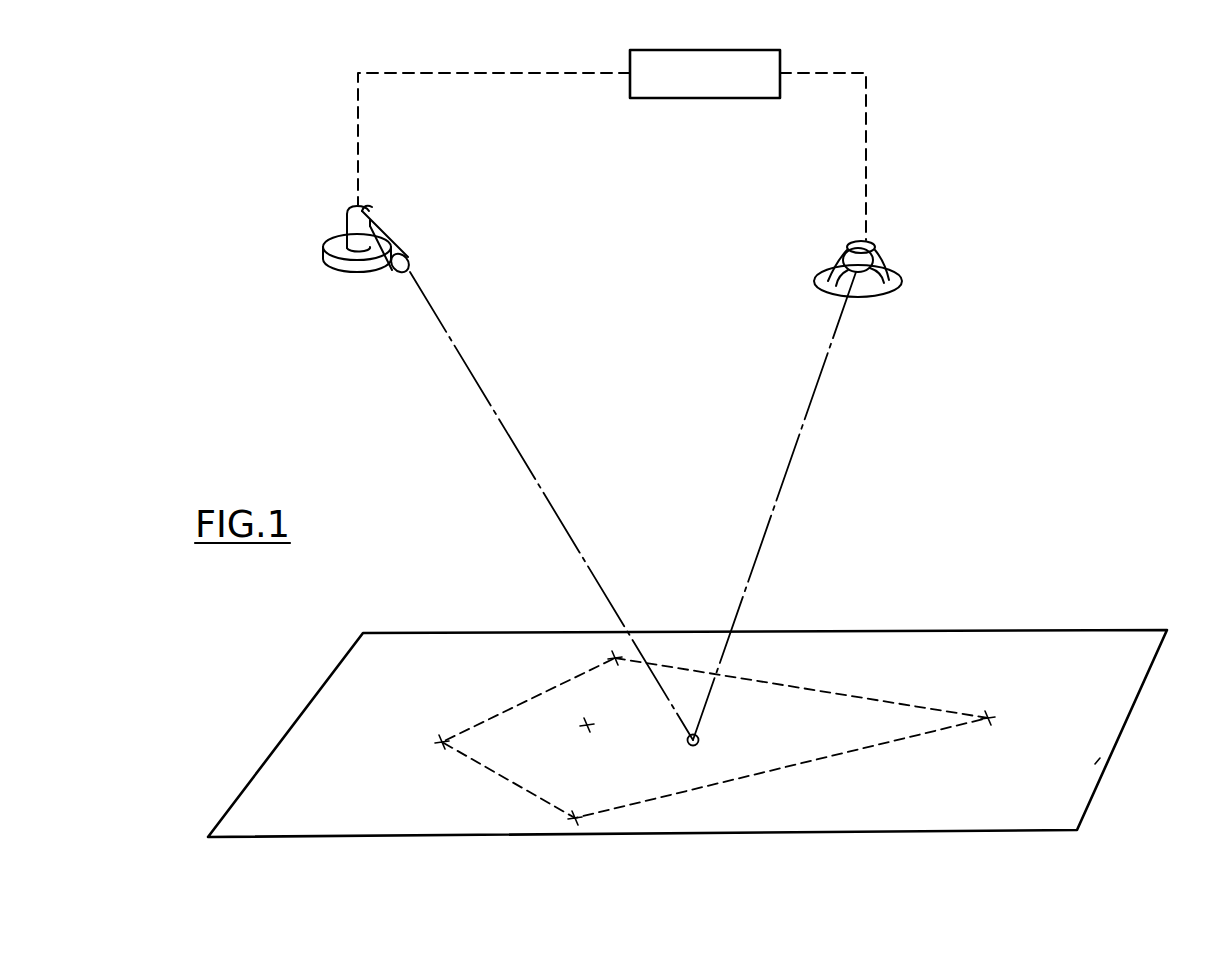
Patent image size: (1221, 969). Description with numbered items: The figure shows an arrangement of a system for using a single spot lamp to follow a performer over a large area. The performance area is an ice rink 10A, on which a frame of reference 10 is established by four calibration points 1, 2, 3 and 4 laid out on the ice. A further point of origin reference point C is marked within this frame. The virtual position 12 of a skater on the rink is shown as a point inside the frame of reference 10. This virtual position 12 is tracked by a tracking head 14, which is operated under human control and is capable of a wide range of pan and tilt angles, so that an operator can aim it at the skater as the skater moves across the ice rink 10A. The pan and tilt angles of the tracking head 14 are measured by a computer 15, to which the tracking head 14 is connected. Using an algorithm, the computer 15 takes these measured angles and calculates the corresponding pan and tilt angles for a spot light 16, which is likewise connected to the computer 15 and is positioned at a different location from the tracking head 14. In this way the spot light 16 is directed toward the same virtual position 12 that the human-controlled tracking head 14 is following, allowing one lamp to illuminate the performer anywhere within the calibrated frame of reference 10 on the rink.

The calibration point 1 is at (993, 736).
The calibration point 2 is at (421, 749).
The calibration point 3 is at (614, 675).
The calibration point 4 is at (577, 802).
The point of origin reference point C is at (591, 736).
The frame of reference 10 is at (693, 792).
The ice rink 10A is at (1097, 762).
The virtual position 12 is at (690, 747).
The tracking head 14 is at (349, 262).
The computer 15 is at (710, 98).
The spot light 16 is at (832, 296).